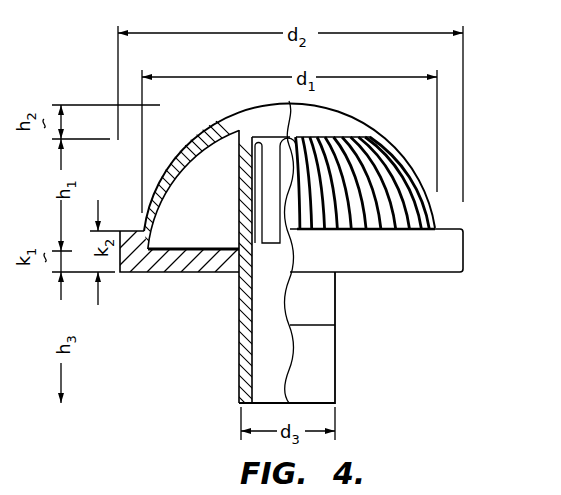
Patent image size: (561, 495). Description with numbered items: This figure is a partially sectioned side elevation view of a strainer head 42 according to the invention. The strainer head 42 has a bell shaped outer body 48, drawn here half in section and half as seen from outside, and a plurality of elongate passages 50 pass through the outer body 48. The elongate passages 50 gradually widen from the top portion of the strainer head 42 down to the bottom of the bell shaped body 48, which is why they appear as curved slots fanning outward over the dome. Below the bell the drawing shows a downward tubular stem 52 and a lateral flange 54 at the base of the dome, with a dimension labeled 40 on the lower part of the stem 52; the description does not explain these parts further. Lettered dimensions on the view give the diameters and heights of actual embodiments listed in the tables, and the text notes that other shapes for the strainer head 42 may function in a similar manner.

The strainer head 42 is at (473, 90).
The bell shaped outer body 48 is at (425, 183).
The elongate passages 50 is at (433, 212).
The tubular stem 52 is at (336, 362).
The flange 54 is at (452, 255).
The stem end portion 40 is at (203, 325).